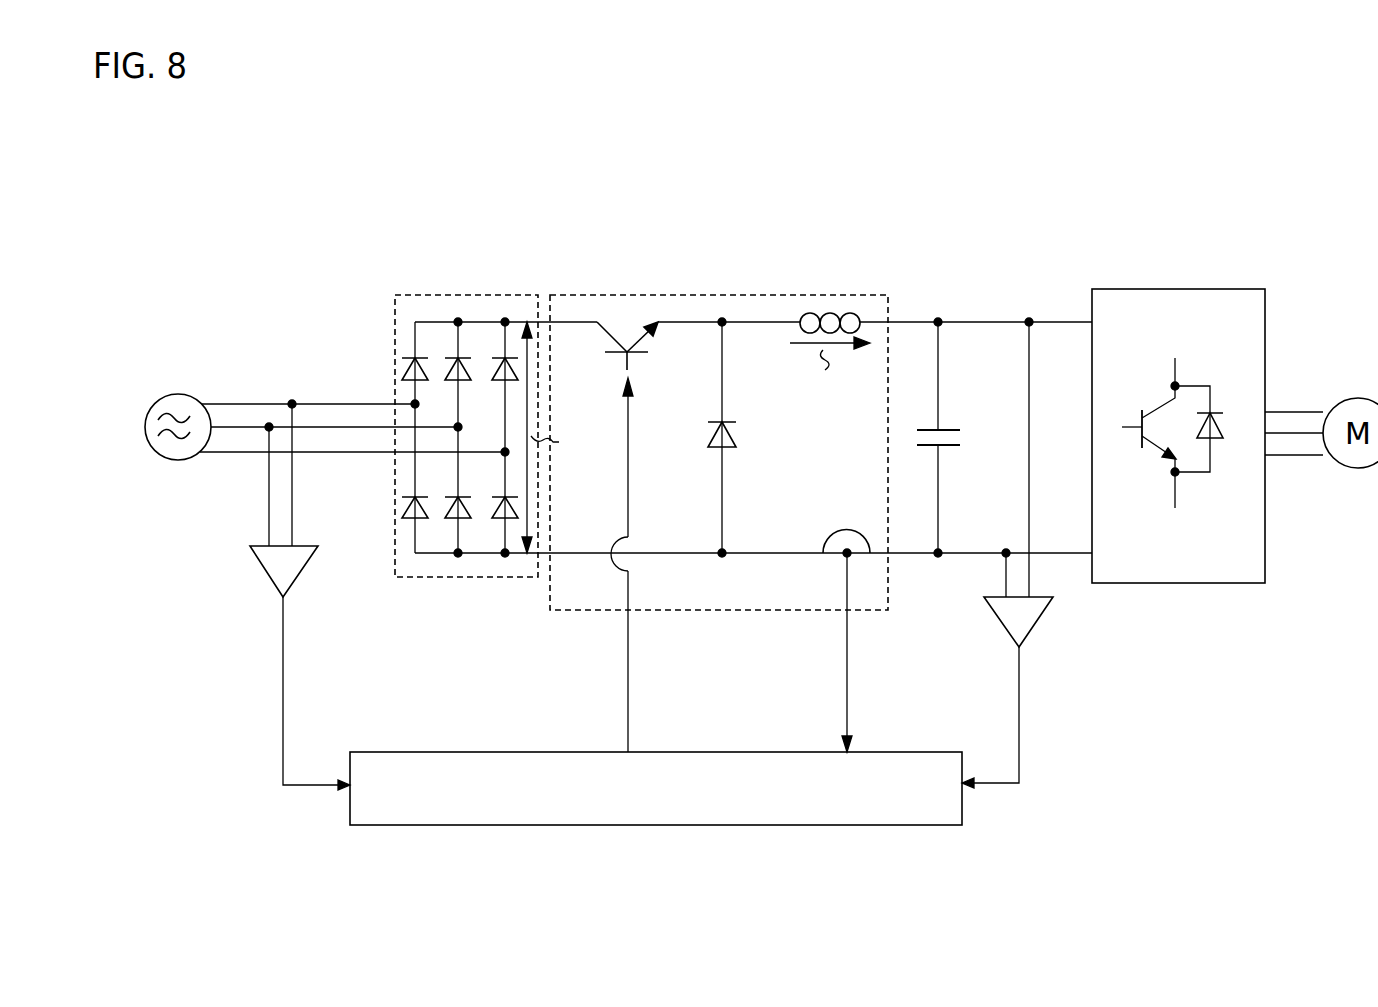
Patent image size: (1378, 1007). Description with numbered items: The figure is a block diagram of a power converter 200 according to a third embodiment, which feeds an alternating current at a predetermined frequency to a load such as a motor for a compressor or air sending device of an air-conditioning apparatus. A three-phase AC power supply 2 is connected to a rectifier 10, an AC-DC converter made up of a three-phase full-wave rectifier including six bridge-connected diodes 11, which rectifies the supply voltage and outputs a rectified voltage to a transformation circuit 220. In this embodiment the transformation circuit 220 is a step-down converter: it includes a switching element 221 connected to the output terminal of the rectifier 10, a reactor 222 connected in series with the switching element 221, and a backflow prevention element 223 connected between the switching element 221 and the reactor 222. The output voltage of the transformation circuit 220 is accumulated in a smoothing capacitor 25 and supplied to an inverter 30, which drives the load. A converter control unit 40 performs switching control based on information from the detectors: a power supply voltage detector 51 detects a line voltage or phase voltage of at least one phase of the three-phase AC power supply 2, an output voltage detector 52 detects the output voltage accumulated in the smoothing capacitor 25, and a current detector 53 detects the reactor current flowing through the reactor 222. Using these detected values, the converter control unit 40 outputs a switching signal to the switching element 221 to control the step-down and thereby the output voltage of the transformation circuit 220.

The three-phase AC power supply 2 is at (176, 396).
The rectifier 10 is at (470, 295).
The diode 11 is at (404, 368).
The power converter 200 is at (645, 227).
The transformation circuit 220 is at (717, 295).
The switching element 221 is at (637, 355).
The reactor 222 is at (820, 312).
The backflow prevention element 223 is at (738, 438).
The smoothing capacitor 25 is at (948, 448).
The inverter 30 is at (1178, 289).
The converter control unit 40 is at (490, 752).
The power supply voltage detector 51 is at (300, 576).
The output voltage detector 52 is at (1036, 624).
The current detector 53 is at (840, 546).